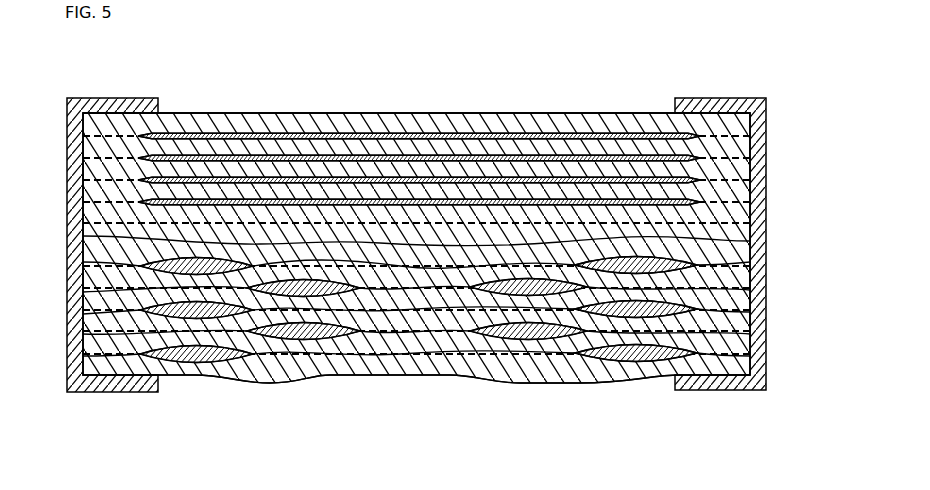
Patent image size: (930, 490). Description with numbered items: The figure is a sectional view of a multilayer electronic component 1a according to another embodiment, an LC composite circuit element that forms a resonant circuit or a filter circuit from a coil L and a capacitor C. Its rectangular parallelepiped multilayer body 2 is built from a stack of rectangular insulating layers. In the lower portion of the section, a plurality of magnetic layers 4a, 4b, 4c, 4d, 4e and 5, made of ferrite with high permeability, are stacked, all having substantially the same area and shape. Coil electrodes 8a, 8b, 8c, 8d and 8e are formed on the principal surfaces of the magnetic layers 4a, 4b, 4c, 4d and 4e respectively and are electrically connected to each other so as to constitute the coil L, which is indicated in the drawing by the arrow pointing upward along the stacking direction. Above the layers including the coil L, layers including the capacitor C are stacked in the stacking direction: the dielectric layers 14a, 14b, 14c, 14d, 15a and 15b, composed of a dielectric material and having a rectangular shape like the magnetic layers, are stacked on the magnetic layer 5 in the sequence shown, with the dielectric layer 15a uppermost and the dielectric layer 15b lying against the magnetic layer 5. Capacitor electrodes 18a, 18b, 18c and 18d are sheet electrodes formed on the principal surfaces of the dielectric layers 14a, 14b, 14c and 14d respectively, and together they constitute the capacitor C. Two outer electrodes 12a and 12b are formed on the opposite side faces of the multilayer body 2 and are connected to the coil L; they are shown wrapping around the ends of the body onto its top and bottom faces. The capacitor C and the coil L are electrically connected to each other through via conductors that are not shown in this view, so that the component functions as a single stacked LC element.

The multilayer electronic component 1a is at (736, 53).
The multilayer body 2 is at (233, 100).
The magnetic layer 4a is at (758, 268).
The magnetic layer 4b is at (758, 289).
The magnetic layer 4c is at (758, 311).
The magnetic layer 4d is at (758, 333).
The magnetic layer 4e is at (758, 356).
The magnetic layer 5 is at (90, 226).
The coil electrode 8a is at (90, 275).
The coil electrode 8b is at (90, 293).
The coil electrode 8c is at (90, 316).
The coil electrode 8d is at (310, 340).
The coil electrode 8e is at (221, 362).
The outer electrode 12a is at (711, 391).
The outer electrode 12b is at (105, 393).
The dielectric layer 14a is at (758, 137).
The dielectric layer 14b is at (758, 160).
The dielectric layer 14c is at (758, 182).
The dielectric layer 14d is at (758, 219).
The dielectric layer 15a is at (645, 113).
The dielectric layer 15b is at (758, 243).
The capacitor electrode 18a is at (318, 130).
The capacitor electrode 18b is at (387, 152).
The capacitor electrode 18c is at (443, 175).
The capacitor electrode 18d is at (95, 197).
The capacitor C is at (595, 124).
The coil L is at (398, 398).